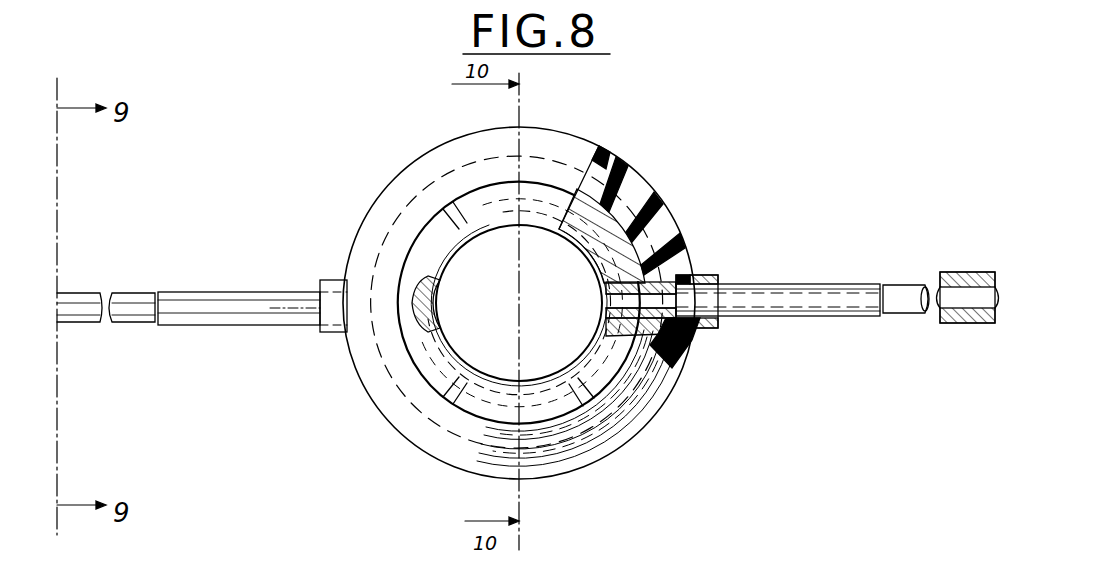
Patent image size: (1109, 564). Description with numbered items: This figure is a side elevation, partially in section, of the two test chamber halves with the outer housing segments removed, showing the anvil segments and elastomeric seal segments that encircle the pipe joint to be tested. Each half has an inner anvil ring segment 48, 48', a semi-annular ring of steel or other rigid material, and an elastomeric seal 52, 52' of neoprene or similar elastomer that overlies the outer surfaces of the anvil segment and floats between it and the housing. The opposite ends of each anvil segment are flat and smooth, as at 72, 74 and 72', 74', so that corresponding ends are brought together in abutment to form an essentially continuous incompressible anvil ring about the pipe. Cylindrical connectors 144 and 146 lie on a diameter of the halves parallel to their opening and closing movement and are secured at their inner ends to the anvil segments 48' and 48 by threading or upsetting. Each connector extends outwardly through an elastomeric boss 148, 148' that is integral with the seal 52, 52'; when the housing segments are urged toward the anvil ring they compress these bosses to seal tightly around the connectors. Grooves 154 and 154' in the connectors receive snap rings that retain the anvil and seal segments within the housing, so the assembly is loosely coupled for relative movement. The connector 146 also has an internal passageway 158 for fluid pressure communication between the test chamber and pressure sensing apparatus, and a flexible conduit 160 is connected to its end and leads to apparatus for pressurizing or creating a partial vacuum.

The anvil segment end 72 is at (519, 287).
The anvil segment end 72' is at (590, 132).
The anvil segment end 74 is at (468, 484).
The anvil segment end 74' is at (578, 418).
The inner anvil ring segment 48 is at (635, 248).
The inner anvil ring segment 48' is at (379, 351).
The elastomeric seal 52 is at (645, 257).
The elastomeric seal 52' is at (397, 459).
The connector 144 is at (250, 278).
The connector 146 is at (820, 266).
The elastomeric boss 148 is at (729, 277).
The elastomeric boss 148' is at (313, 285).
The groove 154 is at (888, 269).
The groove 154' is at (131, 285).
The internal passageway 158 is at (763, 317).
The flexible conduit 160 is at (965, 275).